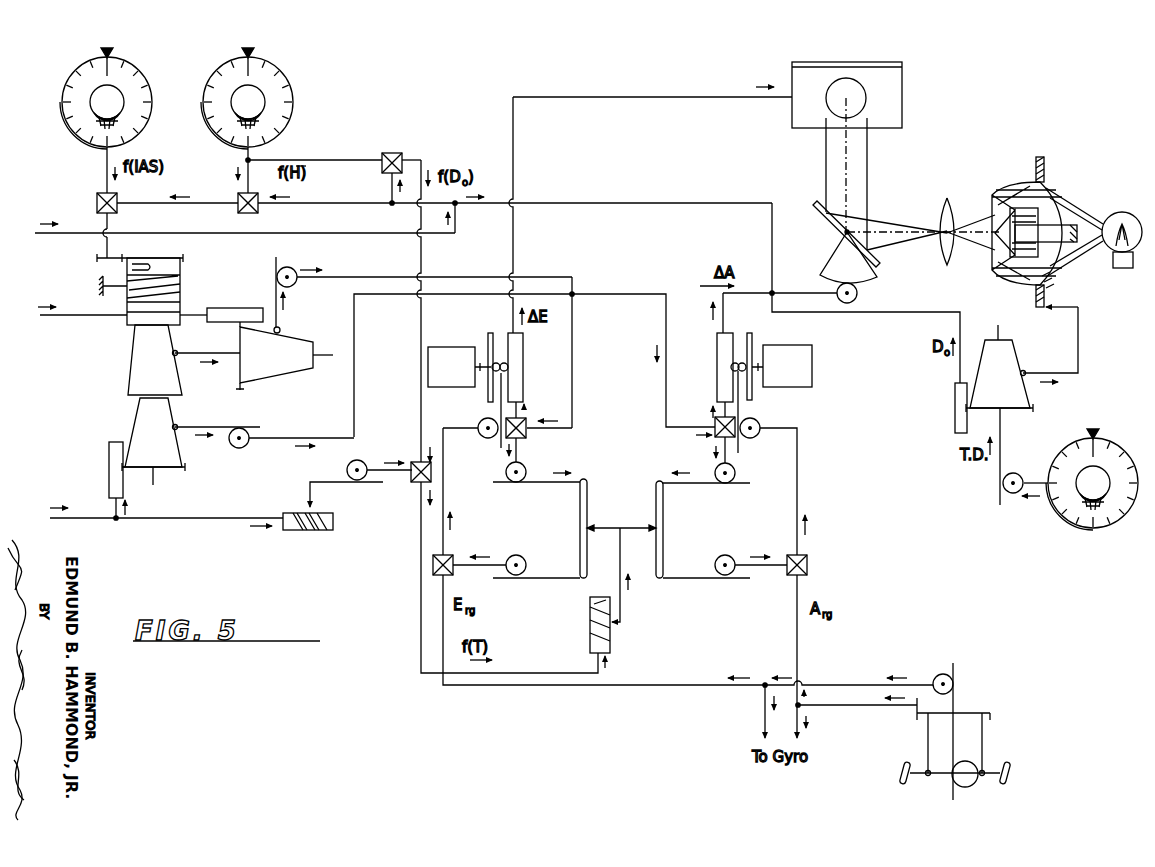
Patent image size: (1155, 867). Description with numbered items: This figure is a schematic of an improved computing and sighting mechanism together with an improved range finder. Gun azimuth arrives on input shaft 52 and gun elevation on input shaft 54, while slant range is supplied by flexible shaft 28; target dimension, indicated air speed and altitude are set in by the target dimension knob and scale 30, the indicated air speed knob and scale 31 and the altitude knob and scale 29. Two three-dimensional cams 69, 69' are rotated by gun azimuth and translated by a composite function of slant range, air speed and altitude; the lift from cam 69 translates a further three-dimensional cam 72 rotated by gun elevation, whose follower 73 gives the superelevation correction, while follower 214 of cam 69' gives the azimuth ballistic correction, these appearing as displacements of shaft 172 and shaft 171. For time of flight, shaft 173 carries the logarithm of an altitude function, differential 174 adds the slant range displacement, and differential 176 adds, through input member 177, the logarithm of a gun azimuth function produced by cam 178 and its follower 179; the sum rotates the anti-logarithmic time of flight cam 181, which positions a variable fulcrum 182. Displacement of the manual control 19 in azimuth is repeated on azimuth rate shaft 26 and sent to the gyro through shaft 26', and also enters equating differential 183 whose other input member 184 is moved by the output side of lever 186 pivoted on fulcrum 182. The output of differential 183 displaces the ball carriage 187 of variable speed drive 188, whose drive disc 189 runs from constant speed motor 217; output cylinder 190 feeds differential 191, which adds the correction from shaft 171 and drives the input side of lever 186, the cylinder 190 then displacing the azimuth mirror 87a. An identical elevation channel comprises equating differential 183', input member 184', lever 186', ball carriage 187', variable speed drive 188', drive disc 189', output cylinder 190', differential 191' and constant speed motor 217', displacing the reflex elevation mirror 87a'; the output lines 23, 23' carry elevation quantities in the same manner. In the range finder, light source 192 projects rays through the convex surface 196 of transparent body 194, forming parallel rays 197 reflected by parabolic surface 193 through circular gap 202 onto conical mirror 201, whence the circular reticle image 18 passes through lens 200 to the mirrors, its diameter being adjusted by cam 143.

The indicated air speed setting knob and scale 31 is at (112, 88).
The altitude setting knob and scale 29 is at (254, 88).
The target dimension knob and scale 30 is at (1103, 468).
The flexible shaft 28 is at (48, 234).
The shaft 173 is at (332, 158).
The differential 174 is at (404, 155).
The shaft 172 is at (346, 276).
The input shaft 54 is at (50, 316).
The follower 73 is at (284, 323).
The three-dimensional cam 72 is at (278, 378).
The three-dimensional cam 69 is at (164, 360).
The three-dimensional cam 69' is at (136, 441).
The follower 214 is at (203, 426).
The shaft 171 is at (289, 430).
The input shaft 52 is at (62, 520).
The cam 178 is at (312, 532).
The follower 179 is at (311, 484).
The input member 177 is at (390, 482).
The differential 176 is at (432, 473).
The constant speed motor 217' is at (459, 353).
The drive disc 189' is at (486, 377).
The variable speed drive 188' is at (471, 397).
The ball carriage 187' is at (537, 375).
The output cylinder 190' is at (544, 349).
The differential 191' is at (539, 433).
The lever 186' is at (540, 520).
The equating differential 183' is at (469, 555).
The input member 184' is at (493, 572).
The variable fulcrum 182 is at (624, 527).
The time of flight cam 181 is at (590, 636).
The variable speed drive 188 is at (750, 317).
The ball carriage 187 is at (705, 375).
The output cylinder 190 is at (698, 351).
The drive disc 189 is at (761, 393).
The constant speed motor 217 is at (806, 362).
The differential 191 is at (707, 432).
The lever 186 is at (703, 520).
The equating differential 183 is at (792, 565).
The input member 184 is at (747, 576).
The elevation error output line 23 is at (878, 674).
The gyro output line 23' is at (751, 710).
The azimuth rate shaft 26 is at (856, 713).
The shaft 26' is at (817, 730).
The manual control 19 is at (1008, 776).
The circular reticle image 18 is at (866, 90).
The elevation mirror 87a' is at (652, 71).
The azimuth mirror 87a is at (894, 252).
The lens 200 is at (942, 216).
The transparent body 194 is at (1040, 200).
The parabolic surface of revolution 193 is at (1002, 185).
The circular gap 202 is at (992, 208).
The conical reflecting surface 201 is at (994, 252).
The light source 192 is at (1116, 214).
The curved surface 196 is at (1064, 210).
The parallel light rays 197 is at (1052, 282).
The cam 143 is at (1012, 352).